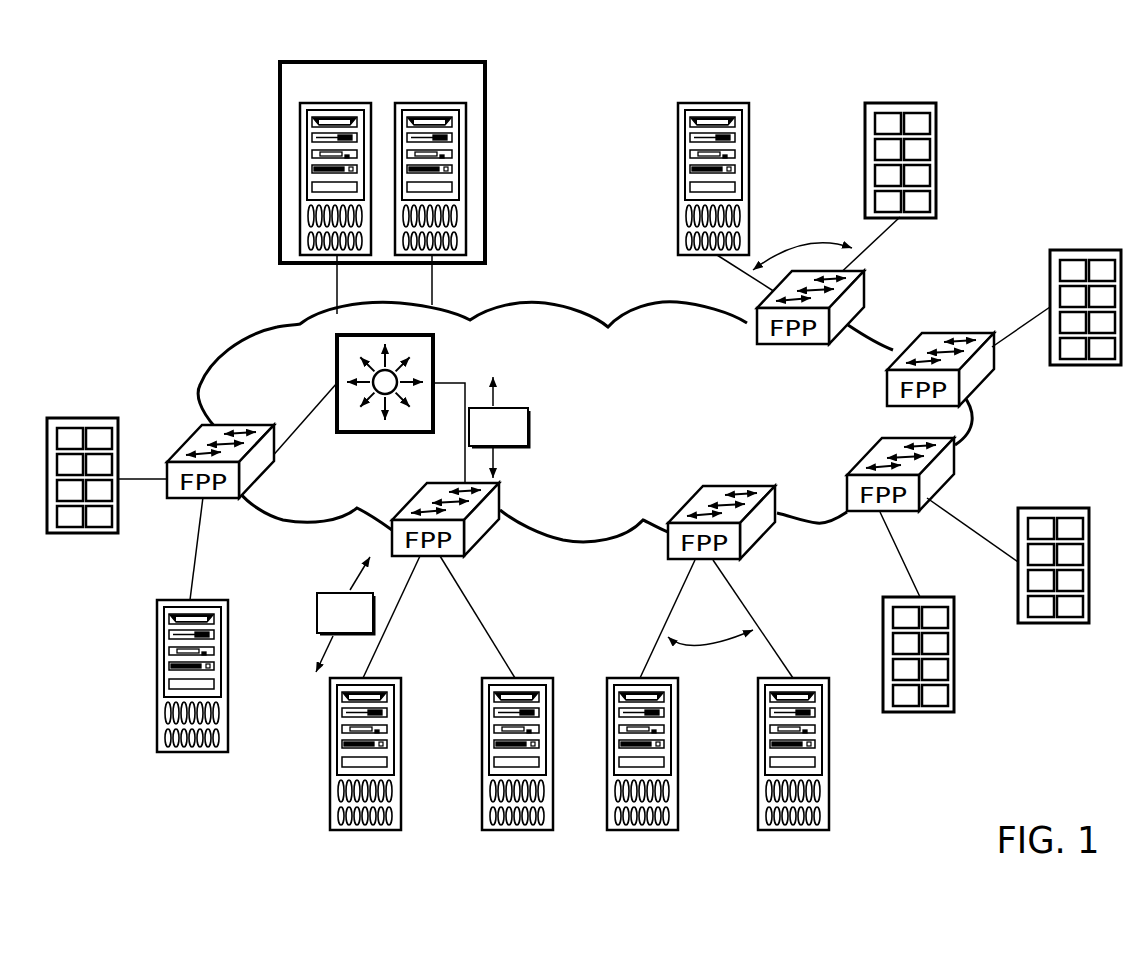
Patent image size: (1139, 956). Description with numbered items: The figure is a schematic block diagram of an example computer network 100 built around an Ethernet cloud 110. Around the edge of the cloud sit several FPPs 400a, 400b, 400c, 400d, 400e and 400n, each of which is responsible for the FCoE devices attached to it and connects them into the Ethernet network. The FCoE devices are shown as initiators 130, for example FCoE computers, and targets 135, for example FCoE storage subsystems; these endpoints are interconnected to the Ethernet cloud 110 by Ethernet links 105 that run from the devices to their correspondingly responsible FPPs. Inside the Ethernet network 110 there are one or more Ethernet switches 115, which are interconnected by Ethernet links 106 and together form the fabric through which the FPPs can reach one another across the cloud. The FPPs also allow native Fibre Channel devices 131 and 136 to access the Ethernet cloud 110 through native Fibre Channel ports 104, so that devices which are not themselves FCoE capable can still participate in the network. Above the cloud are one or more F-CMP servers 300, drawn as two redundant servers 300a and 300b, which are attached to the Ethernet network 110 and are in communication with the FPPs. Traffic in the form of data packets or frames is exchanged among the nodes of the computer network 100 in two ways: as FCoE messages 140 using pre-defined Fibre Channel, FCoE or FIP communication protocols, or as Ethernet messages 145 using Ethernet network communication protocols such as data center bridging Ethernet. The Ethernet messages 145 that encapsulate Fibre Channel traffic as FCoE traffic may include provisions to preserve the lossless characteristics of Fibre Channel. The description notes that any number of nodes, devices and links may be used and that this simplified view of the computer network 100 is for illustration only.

The computer network 100 is at (175, 225).
The F-CMP servers 300 is at (486, 128).
The F-CMP server 300a is at (312, 97).
The F-CMP server 300b is at (458, 97).
The native Fibre Channel device 131 is at (678, 170).
The native Fibre Channel device 136 is at (935, 125).
The native Fibre Channel port 104 is at (800, 247).
The FPP 400n is at (780, 345).
The FPP 400e is at (887, 396).
The FPP 400d is at (866, 452).
The FPP 400c is at (690, 487).
The FPP 400b is at (500, 492).
The FPP 400a is at (242, 424).
The Ethernet links 106 is at (294, 434).
The Ethernet switches 115 is at (438, 348).
The Ethernet messages 145 is at (482, 439).
The Ethernet cloud 110 is at (677, 445).
The targets 135 is at (83, 536).
The initiators 130 is at (193, 753).
The FCoE messages 140 is at (329, 625).
The Ethernet links 105 is at (703, 641).